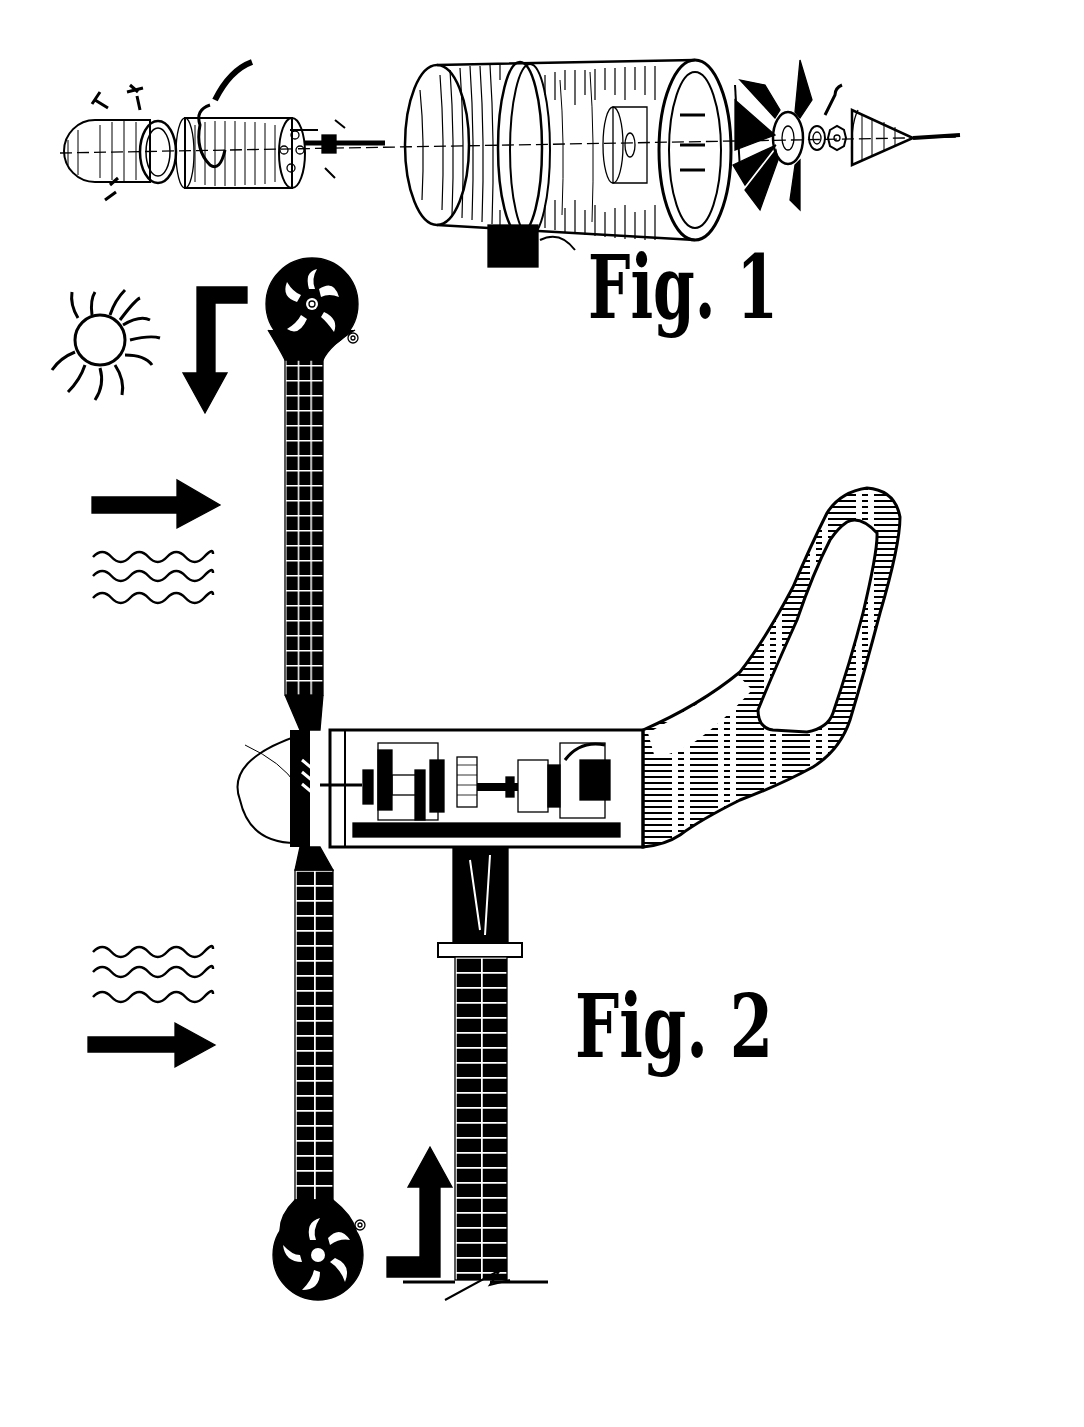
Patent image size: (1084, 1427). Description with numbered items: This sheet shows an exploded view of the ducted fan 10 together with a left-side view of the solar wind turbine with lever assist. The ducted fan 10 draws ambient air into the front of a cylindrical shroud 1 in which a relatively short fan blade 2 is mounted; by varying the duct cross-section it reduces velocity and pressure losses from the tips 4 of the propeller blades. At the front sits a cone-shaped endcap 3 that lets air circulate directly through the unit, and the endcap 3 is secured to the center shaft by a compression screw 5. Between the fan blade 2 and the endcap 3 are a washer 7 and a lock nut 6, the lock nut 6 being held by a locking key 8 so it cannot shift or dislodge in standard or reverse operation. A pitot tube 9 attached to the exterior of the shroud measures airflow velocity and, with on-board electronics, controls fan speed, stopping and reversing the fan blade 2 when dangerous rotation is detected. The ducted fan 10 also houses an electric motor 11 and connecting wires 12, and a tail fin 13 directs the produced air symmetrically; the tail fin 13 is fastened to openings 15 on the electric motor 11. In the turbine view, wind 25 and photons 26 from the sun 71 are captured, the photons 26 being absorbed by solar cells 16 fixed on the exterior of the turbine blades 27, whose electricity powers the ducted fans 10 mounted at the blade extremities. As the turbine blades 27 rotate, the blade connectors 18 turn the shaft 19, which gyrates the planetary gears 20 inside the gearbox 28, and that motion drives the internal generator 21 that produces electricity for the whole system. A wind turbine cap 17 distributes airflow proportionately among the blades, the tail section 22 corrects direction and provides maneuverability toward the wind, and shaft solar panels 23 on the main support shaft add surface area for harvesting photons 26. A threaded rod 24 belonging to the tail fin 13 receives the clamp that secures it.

In FIG. 1, the shroud 1 is at (575, 90).
In FIG. 1, the fan blade 2 is at (769, 135).
In FIG. 2, the fan blade 2 is at (280, 1240).
In FIG. 1, the cone-shaped endcap 3 is at (880, 108).
In FIG. 2, the cone-shaped endcap 3 is at (343, 1190).
In FIG. 1, the tips of the propeller blades 4 is at (760, 210).
In FIG. 1, the compression screw 5 is at (940, 148).
In FIG. 1, the lock nut 6 is at (843, 157).
In FIG. 1, the washer 7 is at (817, 157).
In FIG. 1, the locking key 8 is at (842, 100).
In FIG. 1, the pitot tube 9 is at (470, 253).
In FIG. 2, the pitot tube 9 is at (358, 344).
In FIG. 1, the ducted fan 10 is at (470, 100).
In FIG. 1, the electric motor 11 is at (235, 113).
In FIG. 1, the connecting wires 12 is at (200, 128).
In FIG. 1, the tail fin 13 is at (132, 182).
In FIG. 2, the tail fin 13 is at (285, 278).
In FIG. 1, the openings 15 is at (200, 182).
In FIG. 2, the solar cells 16 is at (325, 505).
In FIG. 2, the wind turbine cap 17 is at (250, 770).
In FIG. 2, the blade connectors 18 is at (355, 735).
In FIG. 2, the shaft 19 is at (395, 735).
In FIG. 2, the planetary gears 20 is at (445, 735).
In FIG. 2, the generator 21 is at (580, 745).
In FIG. 2, the tail section 22 is at (745, 693).
In FIG. 2, the shaft solar panels 23 is at (510, 1110).
In FIG. 2, the threaded rod 24 is at (525, 935).
In FIG. 2, the wind 25 is at (150, 465).
In FIG. 2, the photons 26 is at (162, 950).
In FIG. 2, the turbine blades 27 is at (325, 615).
In FIG. 2, the gearbox 28 is at (472, 752).
In FIG. 2, the sun 71 is at (95, 420).